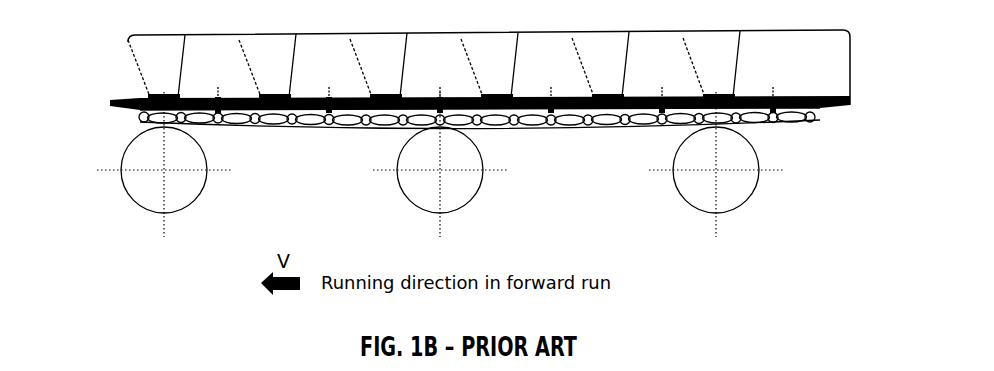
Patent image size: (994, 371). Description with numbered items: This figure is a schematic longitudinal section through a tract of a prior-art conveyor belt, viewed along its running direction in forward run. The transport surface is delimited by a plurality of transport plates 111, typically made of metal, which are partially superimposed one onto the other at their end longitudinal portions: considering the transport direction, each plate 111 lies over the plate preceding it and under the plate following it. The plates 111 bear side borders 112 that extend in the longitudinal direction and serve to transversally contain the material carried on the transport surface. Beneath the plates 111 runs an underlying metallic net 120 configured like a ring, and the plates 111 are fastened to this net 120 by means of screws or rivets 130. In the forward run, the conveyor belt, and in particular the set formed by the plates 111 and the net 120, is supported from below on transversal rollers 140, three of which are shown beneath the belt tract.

The transport plate 111 is at (815, 98).
The side border 112 is at (458, 78).
The metallic net 120 is at (607, 133).
The screw or rivet 130 is at (553, 122).
The transversal roller 140 is at (140, 188).